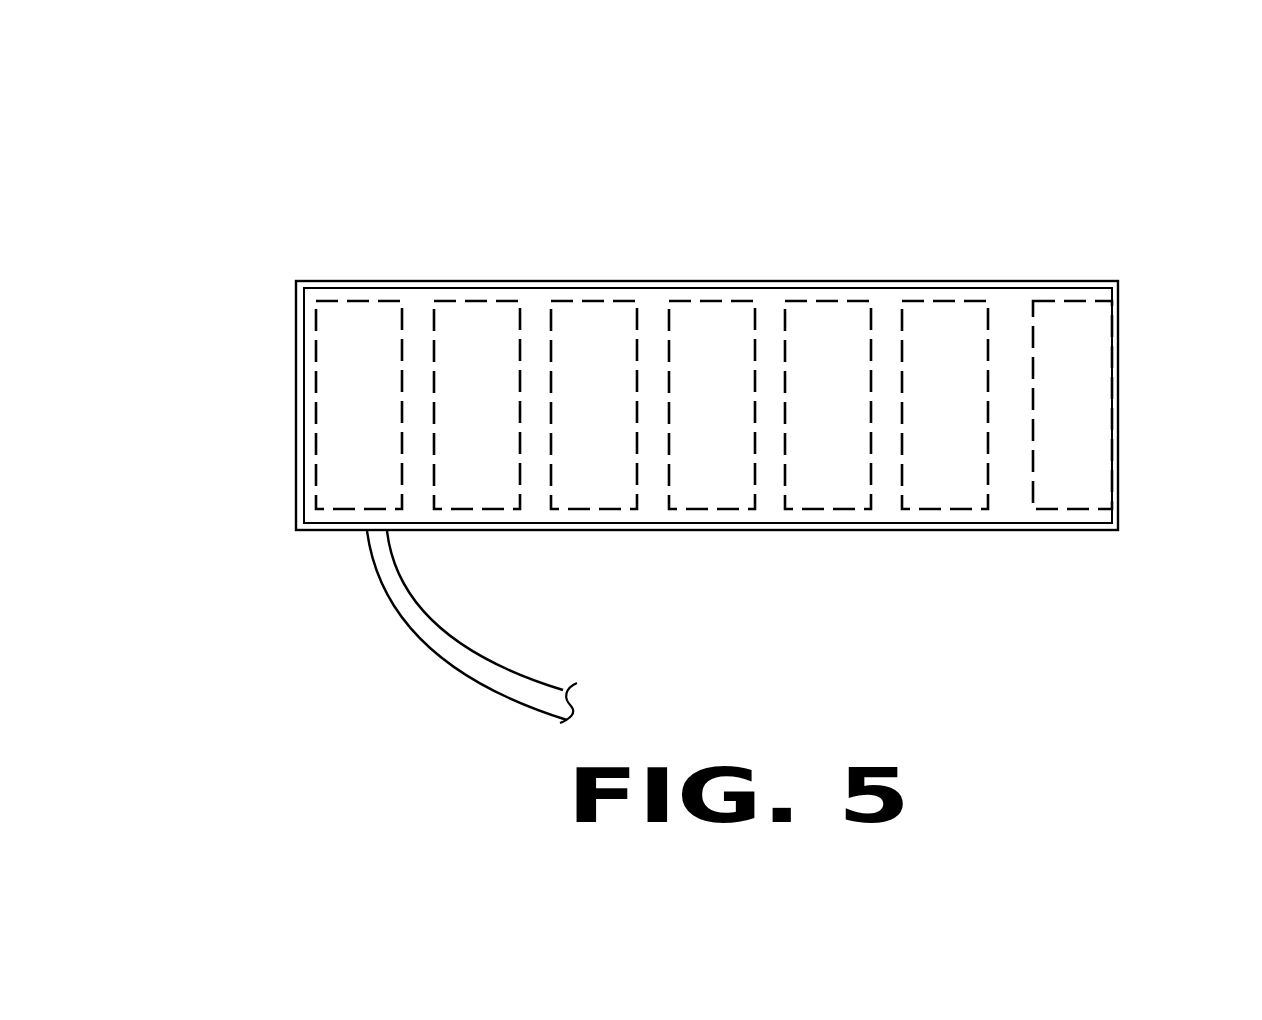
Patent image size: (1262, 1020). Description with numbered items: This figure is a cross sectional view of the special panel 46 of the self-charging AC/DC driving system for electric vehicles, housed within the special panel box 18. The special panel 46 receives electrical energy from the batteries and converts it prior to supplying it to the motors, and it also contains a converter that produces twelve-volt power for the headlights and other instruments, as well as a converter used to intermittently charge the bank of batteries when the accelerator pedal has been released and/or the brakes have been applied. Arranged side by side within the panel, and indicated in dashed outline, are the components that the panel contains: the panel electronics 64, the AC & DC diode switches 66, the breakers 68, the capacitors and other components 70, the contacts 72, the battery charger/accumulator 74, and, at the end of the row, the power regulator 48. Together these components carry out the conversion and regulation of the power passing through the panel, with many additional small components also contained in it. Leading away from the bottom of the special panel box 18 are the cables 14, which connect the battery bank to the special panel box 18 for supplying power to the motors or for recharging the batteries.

The special panel 46 is at (283, 178).
The special panel box 18 is at (1119, 422).
The panel electronics 64 is at (357, 327).
The AC & DC diode switches 66 is at (477, 305).
The breakers 68 is at (592, 313).
The capacitors and other components 70 is at (710, 318).
The contacts 72 is at (835, 317).
The battery charger/accumulator 74 is at (943, 313).
The power regulator 48 is at (1080, 303).
The cables connecting the battery bank to special panel box 14 is at (392, 608).